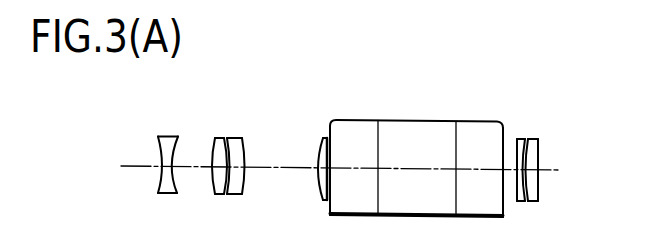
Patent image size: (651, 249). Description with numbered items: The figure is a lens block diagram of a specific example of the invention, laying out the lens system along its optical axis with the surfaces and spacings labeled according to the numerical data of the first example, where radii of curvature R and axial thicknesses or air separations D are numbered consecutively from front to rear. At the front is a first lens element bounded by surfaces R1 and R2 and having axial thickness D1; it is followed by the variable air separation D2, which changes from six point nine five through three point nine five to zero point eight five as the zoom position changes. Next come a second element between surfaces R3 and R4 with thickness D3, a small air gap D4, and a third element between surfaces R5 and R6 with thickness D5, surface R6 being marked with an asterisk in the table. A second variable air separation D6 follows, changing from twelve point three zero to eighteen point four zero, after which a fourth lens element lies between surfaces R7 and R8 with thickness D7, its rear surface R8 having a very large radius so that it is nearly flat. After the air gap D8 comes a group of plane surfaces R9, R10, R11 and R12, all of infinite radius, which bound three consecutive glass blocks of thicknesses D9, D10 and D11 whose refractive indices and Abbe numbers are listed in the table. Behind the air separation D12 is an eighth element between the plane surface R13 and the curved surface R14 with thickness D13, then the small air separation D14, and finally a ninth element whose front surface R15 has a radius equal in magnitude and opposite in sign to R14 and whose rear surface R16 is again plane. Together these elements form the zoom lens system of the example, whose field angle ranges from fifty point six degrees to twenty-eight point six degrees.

The radius of curvature of first surface R1 is at (158, 136).
The radius of curvature of second surface R2 is at (179, 134).
The radius of curvature of third surface R3 is at (215, 140).
The radius of curvature of fourth surface R4 is at (225, 140).
The radius of curvature of fifth surface R5 is at (230, 140).
The radius of curvature of sixth surface R6 is at (243, 140).
The radius of curvature of seventh surface R7 is at (317, 142).
The radius of curvature of eighth surface R8 is at (325, 138).
The radius of curvature of ninth surface R9 is at (332, 120).
The radius of curvature of tenth surface R10 is at (380, 120).
The radius of curvature of eleventh surface R11 is at (457, 121).
The radius of curvature of twelfth surface R12 is at (503, 123).
The radius of curvature of thirteenth surface R13 is at (518, 139).
The radius of curvature of fourteenth surface R14 is at (525, 139).
The radius of curvature of fifteenth surface R15 is at (529, 139).
The radius of curvature of sixteenth surface R16 is at (539, 143).
The axial thickness D1 is at (163, 194).
The air separation D2 is at (200, 168).
The axial thickness D3 is at (222, 194).
The air separation D4 is at (228, 195).
The axial thickness D5 is at (243, 190).
The air separation D6 is at (296, 170).
The axial thickness D7 is at (322, 200).
The air separation D8 is at (362, 170).
The axial thickness D9 is at (423, 170).
The axial thickness D10 is at (483, 172).
The axial thickness D11 is at (513, 175).
The air separation D12 is at (520, 178).
The axial thickness D13 is at (531, 185).
The air separation D14 is at (537, 184).